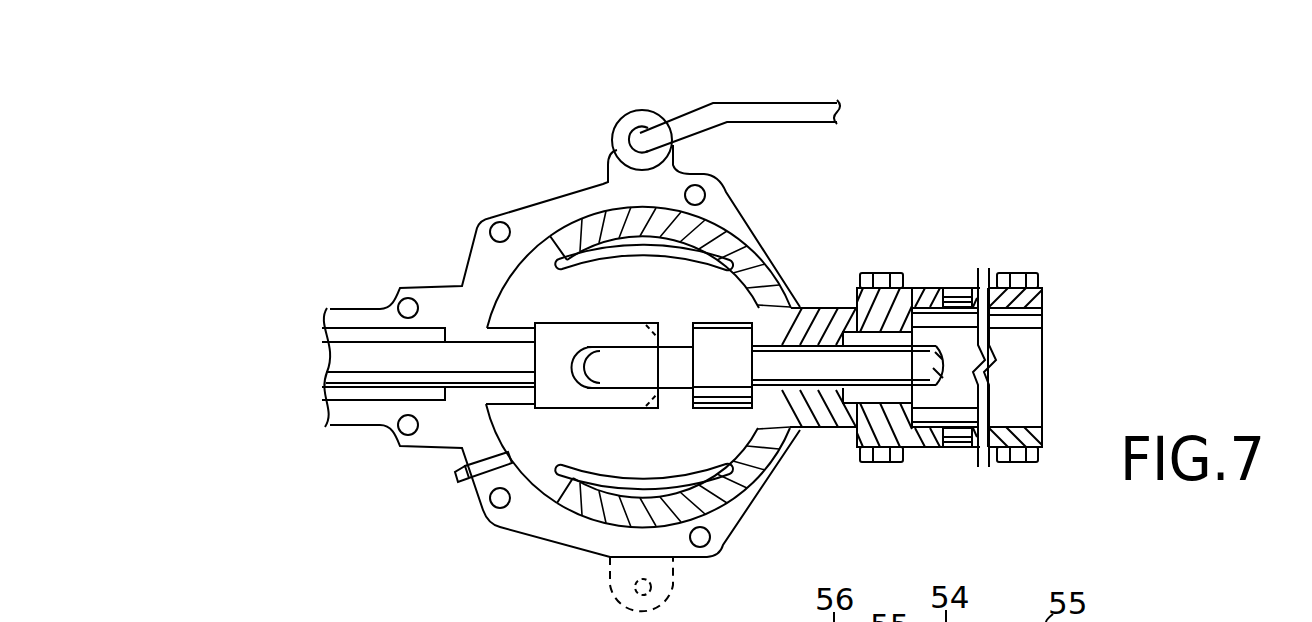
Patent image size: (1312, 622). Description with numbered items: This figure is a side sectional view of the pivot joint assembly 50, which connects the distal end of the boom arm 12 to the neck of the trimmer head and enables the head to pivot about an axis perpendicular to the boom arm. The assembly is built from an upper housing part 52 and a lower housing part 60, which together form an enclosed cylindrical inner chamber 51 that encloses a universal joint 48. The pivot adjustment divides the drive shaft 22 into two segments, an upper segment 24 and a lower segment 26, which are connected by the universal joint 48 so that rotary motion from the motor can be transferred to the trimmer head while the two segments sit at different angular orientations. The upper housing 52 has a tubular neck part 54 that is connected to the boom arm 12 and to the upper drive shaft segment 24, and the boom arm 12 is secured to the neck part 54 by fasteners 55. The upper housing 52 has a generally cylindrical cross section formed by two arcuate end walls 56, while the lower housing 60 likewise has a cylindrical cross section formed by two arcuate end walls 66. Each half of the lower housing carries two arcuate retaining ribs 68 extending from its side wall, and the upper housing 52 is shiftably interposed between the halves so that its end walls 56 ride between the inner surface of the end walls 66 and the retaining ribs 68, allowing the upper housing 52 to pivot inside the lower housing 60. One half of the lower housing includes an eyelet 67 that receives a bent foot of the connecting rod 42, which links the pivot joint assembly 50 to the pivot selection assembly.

The boom arm 12 is at (1038, 317).
The drive shaft 22 is at (320, 379).
The upper drive shaft segment 24 is at (817, 357).
The lower drive shaft segment 26 is at (383, 356).
The connecting rod 42 is at (789, 108).
The universal joint 48 is at (601, 414).
The pivot joint assembly 50 is at (945, 160).
The inner chamber 51 is at (610, 311).
The upper housing part 52 is at (792, 473).
The tubular neck part 54 is at (910, 297).
The fasteners 55 is at (883, 273).
The arcuate end walls 56 is at (640, 225).
The lower housing part 60 is at (466, 254).
The arcuate end walls 66 is at (553, 208).
The eyelet 67 is at (607, 158).
The arcuate retaining ribs 68 is at (677, 250).